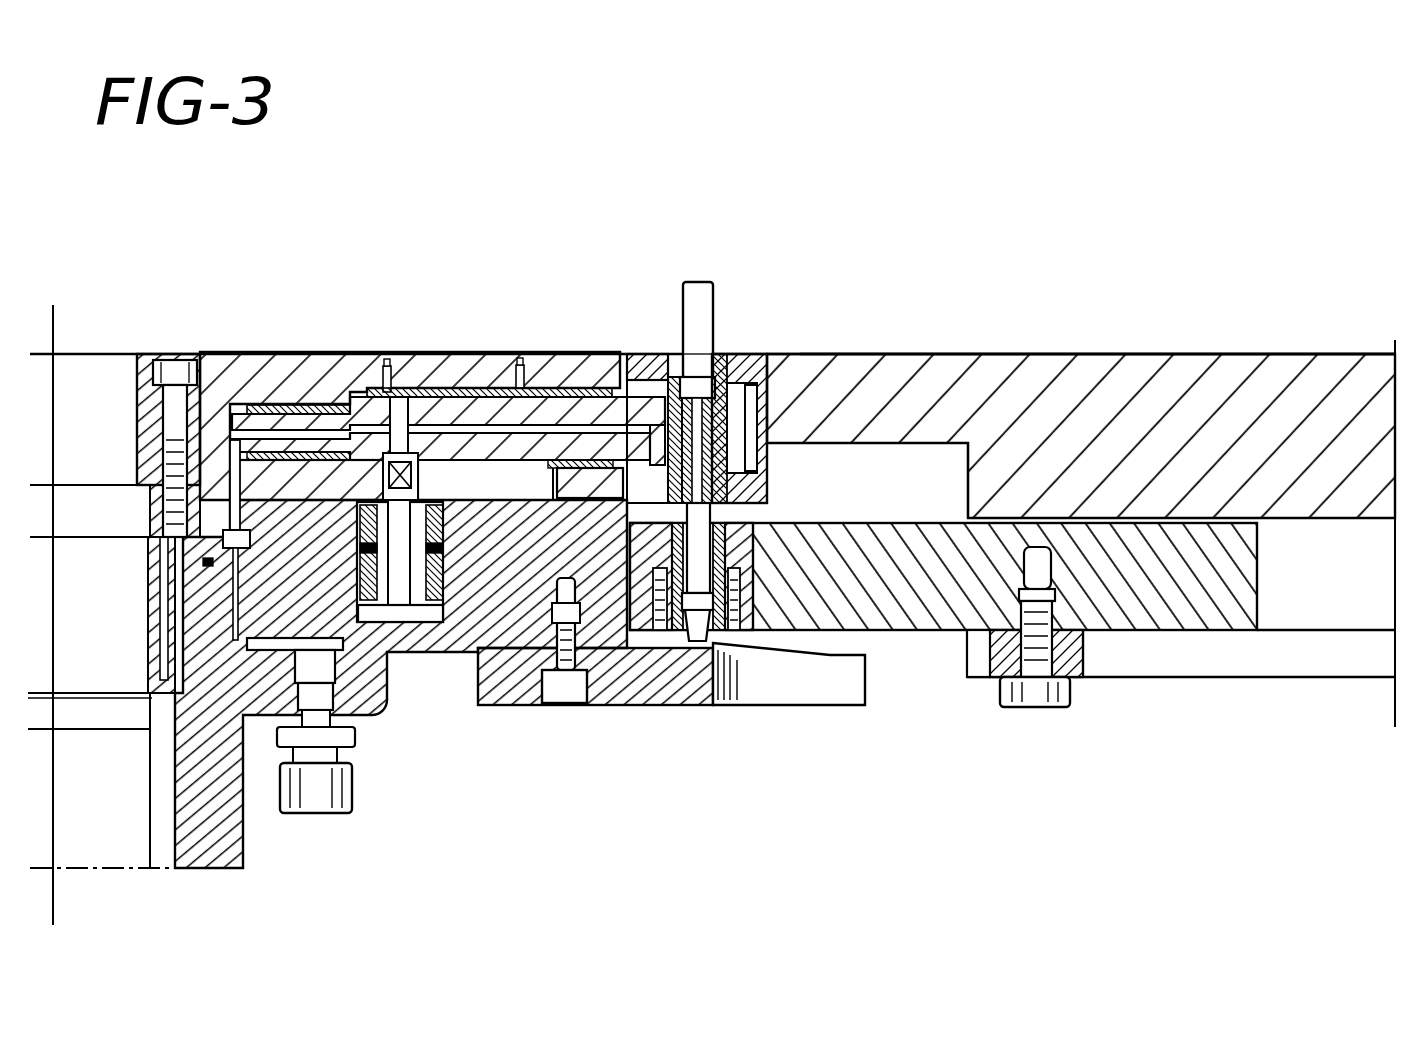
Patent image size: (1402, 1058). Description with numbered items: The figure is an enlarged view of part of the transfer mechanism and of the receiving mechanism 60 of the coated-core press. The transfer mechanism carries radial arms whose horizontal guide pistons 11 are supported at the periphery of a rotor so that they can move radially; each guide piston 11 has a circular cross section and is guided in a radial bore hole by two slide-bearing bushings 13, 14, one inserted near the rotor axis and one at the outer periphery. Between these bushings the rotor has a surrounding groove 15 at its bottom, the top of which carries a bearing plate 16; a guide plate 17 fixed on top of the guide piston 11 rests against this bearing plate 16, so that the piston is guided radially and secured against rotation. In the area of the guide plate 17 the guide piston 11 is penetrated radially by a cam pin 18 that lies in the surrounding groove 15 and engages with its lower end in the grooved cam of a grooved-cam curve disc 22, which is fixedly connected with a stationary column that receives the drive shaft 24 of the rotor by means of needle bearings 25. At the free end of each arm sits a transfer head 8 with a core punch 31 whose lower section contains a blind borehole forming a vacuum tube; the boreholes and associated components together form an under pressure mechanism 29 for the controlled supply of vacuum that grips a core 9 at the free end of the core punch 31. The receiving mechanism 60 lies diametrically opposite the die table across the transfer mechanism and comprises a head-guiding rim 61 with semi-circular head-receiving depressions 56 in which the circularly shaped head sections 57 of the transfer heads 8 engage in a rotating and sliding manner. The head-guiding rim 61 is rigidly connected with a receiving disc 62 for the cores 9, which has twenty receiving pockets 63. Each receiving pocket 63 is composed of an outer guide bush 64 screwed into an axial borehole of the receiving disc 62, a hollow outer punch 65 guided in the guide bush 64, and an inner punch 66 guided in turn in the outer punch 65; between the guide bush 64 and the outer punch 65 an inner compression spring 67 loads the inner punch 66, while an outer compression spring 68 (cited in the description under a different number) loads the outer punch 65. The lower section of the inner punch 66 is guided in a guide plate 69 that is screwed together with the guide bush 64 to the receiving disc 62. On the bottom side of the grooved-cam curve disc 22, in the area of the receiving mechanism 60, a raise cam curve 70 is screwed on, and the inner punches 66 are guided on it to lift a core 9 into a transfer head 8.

The transfer head 8 is at (671, 317).
The core 9 is at (680, 518).
The guide piston 11 is at (430, 398).
The slide-bearing bushing 13 is at (272, 402).
The slide-bearing bushing 14 is at (578, 386).
The surrounding groove 15 is at (512, 494).
The bearing plate 16 is at (486, 440).
The guide plate 17 is at (372, 400).
The cam pin 18 is at (385, 483).
The grooved-cam curve disc 22 is at (453, 637).
The drive shaft 24 is at (106, 820).
The needle bearings 25 is at (150, 606).
The under pressure mechanism 29 is at (520, 382).
The core punch 31 is at (712, 285).
The head-receiving depressions 56 is at (768, 385).
The head section 57 is at (745, 358).
The receiving mechanism 60 is at (1097, 322).
The head-guiding rim 61 is at (930, 350).
The receiving disc 62 is at (1137, 616).
The receiving pockets 63 is at (766, 521).
The outer guide bush 64 is at (770, 530).
The hollow outer punch 65 is at (655, 528).
The inner punch 66 is at (718, 549).
The inner compression spring 67 is at (660, 556).
The set screw 68 is at (740, 580).
The guide plate 69 is at (682, 642).
The raise cam curve 70 is at (834, 660).